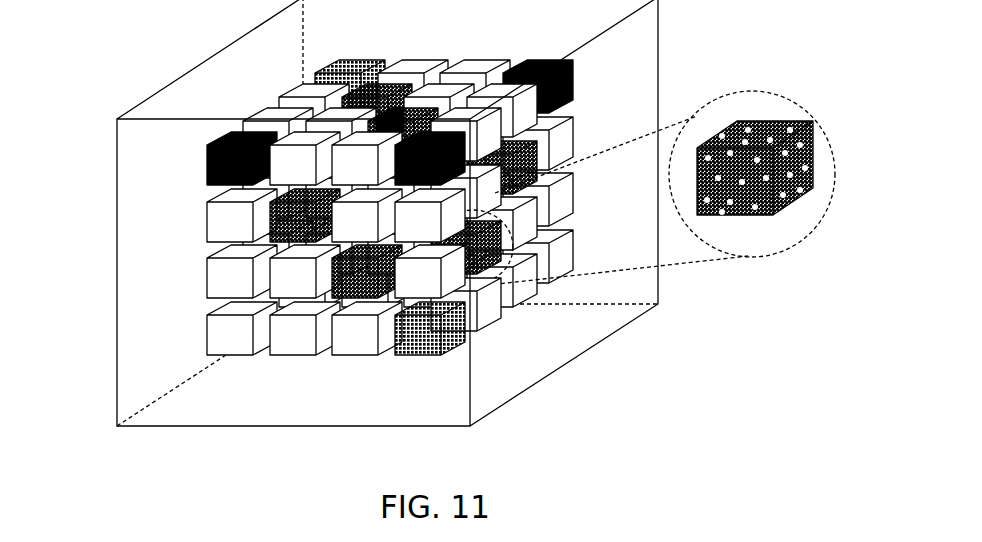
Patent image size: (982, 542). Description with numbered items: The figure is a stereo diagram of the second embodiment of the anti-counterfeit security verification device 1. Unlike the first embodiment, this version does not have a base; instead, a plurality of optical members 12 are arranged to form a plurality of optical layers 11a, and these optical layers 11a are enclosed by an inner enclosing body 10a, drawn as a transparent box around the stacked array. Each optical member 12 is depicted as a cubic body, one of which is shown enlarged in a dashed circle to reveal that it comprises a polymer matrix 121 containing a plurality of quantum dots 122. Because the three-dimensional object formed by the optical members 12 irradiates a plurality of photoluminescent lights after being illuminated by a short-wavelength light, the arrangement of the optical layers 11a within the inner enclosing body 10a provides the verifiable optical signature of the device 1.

The anti-counterfeit security verification device 1 is at (115, 95).
The inner enclosing body 10a is at (109, 396).
The optical layers 11a is at (417, 357).
The optical member 12 is at (633, 149).
The polymer matrix 121 is at (799, 123).
The quantum dots 122 is at (800, 57).